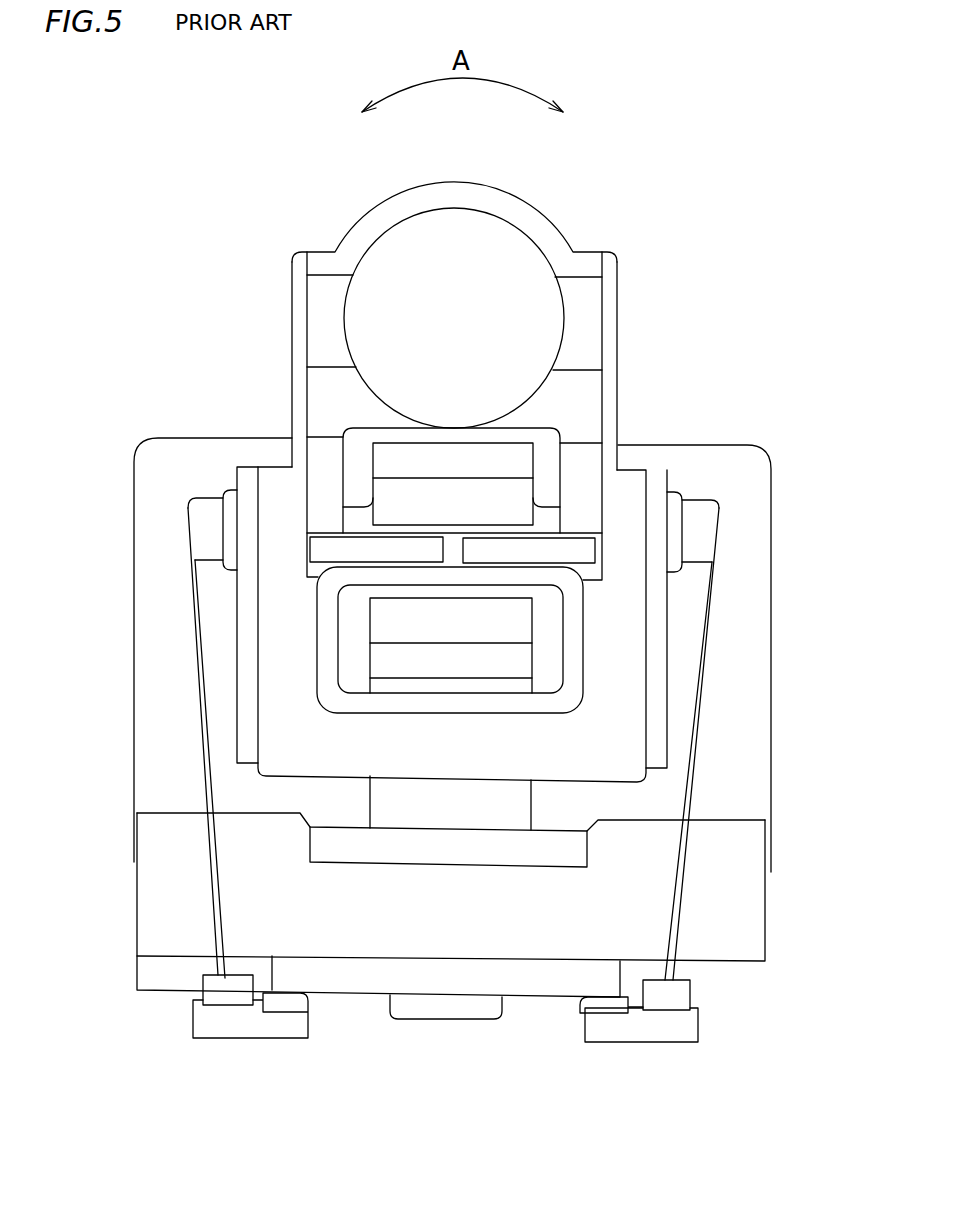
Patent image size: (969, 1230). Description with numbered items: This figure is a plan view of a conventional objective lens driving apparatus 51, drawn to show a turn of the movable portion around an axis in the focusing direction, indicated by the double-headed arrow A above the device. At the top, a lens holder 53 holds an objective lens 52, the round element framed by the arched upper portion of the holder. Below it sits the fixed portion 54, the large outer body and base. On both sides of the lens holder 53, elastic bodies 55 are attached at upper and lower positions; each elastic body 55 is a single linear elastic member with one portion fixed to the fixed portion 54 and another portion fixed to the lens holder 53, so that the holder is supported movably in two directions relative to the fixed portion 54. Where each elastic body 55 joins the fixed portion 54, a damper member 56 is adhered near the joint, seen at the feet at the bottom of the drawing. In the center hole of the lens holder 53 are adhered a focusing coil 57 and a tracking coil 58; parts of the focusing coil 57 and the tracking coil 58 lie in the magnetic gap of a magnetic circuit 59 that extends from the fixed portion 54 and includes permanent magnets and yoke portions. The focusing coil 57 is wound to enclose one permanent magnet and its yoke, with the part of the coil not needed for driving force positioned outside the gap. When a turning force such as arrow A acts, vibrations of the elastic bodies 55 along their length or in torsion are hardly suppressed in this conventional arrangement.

The objective lens driving apparatus 51 is at (573, 210).
The objective lens 52 is at (535, 322).
The lens holder 53 is at (328, 298).
The fixed portion 54 is at (748, 640).
The elastic body 55 is at (193, 690).
The damper member 56 is at (213, 983).
The focusing coil 57 is at (575, 623).
The tracking coil 58 is at (422, 552).
The magnetic circuit 59 is at (375, 470).